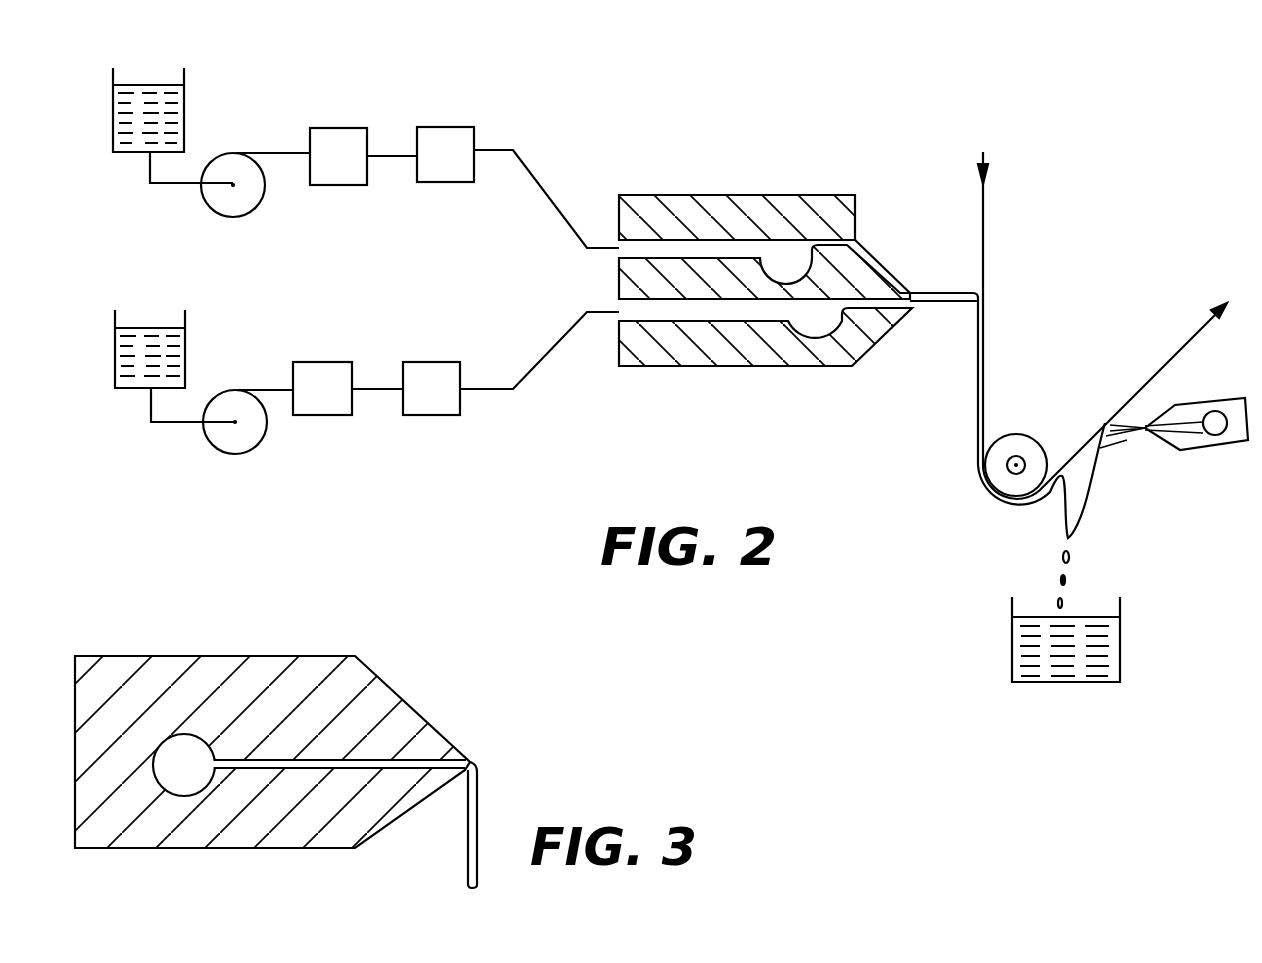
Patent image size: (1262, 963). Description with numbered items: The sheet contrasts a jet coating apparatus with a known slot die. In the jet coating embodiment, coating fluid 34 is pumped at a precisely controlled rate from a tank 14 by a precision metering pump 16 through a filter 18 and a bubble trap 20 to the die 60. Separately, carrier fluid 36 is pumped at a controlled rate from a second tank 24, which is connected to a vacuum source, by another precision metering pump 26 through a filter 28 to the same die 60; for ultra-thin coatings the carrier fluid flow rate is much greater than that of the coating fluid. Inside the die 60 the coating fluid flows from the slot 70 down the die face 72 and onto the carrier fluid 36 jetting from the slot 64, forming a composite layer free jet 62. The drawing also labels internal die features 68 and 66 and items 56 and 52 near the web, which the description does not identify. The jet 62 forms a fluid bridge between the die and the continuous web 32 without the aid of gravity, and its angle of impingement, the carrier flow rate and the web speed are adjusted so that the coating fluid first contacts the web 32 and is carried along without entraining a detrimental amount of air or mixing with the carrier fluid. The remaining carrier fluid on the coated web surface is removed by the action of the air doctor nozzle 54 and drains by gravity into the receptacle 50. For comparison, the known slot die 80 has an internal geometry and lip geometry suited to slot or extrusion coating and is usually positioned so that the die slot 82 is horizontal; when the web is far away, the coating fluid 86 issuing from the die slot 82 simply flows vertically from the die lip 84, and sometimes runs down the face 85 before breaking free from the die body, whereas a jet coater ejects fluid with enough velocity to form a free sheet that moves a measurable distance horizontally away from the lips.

In FIG. 2, the tank 14 is at (186, 91).
In FIG. 2, the coating fluid 34 is at (156, 82).
In FIG. 2, the precision metering pump 16 is at (241, 207).
In FIG. 2, the filter 18 is at (338, 128).
In FIG. 2, the bubble trap 20 is at (447, 127).
In FIG. 2, the tank 24 is at (184, 337).
In FIG. 2, the carrier fluid 36 is at (159, 325).
In FIG. 2, the precision metering pump 26 is at (250, 443).
In FIG. 2, the filter 28 is at (320, 367).
In FIG. 2, the die 60 is at (779, 288).
In FIG. 2, the upper manifold cavity 68 is at (803, 258).
In FIG. 2, the slot 70 is at (833, 243).
In FIG. 2, the die face 72 is at (880, 266).
In FIG. 2, the jet 62 is at (939, 306).
In FIG. 2, the slot 64 is at (878, 306).
In FIG. 2, the lower manifold cavity 66 is at (824, 333).
In FIG. 2, the web 32 is at (985, 206).
In FIG. 2, the turn roller 56 is at (1025, 442).
In FIG. 2, the liquid stream 52 is at (1126, 440).
In FIG. 2, the air doctor nozzle 54 is at (1235, 445).
In FIG. 2, the receptacle 50 is at (1120, 633).
In FIG. 3, the slot die 80 is at (255, 665).
In FIG. 3, the die slot 82 is at (472, 760).
In FIG. 3, the die lip 84 is at (465, 771).
In FIG. 3, the face 85 is at (393, 825).
In FIG. 3, the coating fluid 86 is at (478, 818).